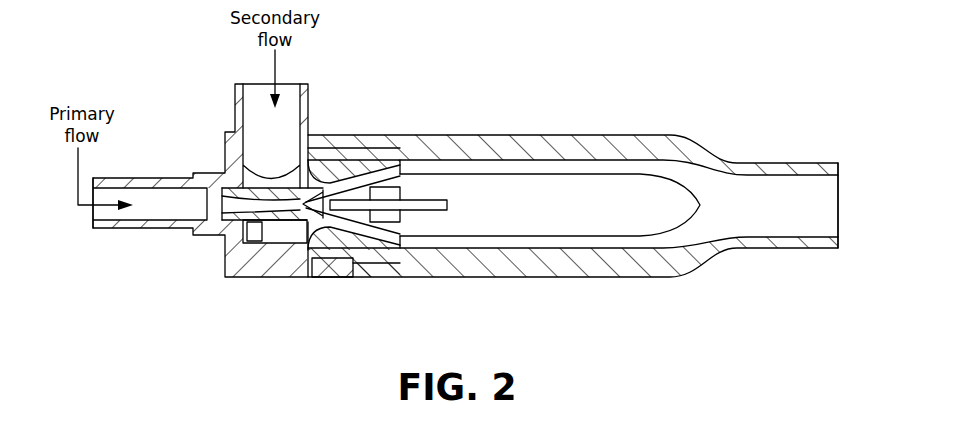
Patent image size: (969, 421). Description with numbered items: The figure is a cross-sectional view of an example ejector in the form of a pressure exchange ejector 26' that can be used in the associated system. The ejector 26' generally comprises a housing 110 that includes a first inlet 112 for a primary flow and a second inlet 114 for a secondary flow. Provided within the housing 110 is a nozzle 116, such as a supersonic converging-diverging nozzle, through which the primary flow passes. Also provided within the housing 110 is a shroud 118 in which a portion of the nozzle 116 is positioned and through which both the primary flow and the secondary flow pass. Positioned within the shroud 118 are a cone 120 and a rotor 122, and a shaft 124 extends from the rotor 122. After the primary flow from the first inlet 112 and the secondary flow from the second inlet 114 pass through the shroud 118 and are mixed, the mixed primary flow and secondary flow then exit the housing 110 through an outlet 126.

The pressure exchange ejector 26' is at (492, 190).
The housing 110 is at (642, 293).
The first inlet 112 is at (143, 213).
The second inlet 114 is at (290, 103).
The nozzle 116 is at (258, 218).
The shroud 118 is at (362, 168).
The cone 120 is at (313, 263).
The rotor 122 is at (354, 262).
The shaft 124 is at (447, 203).
The outlet 126 is at (815, 207).